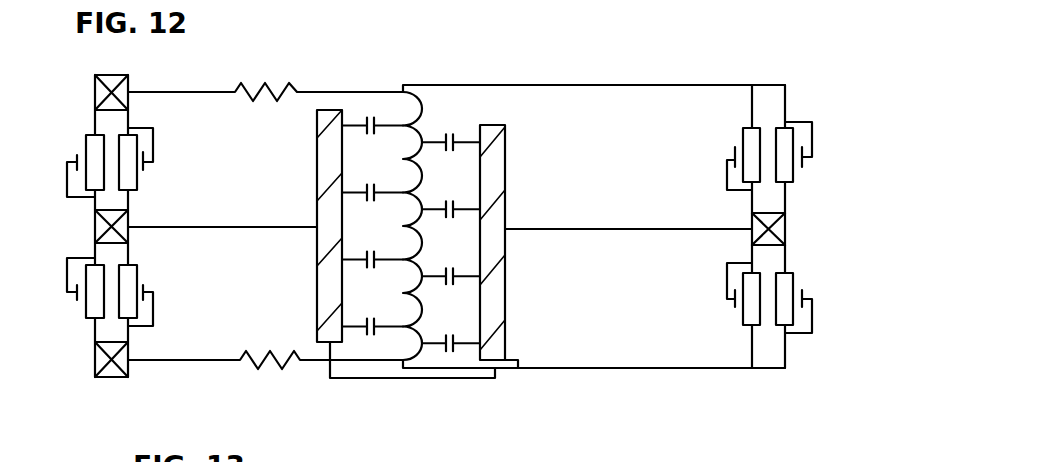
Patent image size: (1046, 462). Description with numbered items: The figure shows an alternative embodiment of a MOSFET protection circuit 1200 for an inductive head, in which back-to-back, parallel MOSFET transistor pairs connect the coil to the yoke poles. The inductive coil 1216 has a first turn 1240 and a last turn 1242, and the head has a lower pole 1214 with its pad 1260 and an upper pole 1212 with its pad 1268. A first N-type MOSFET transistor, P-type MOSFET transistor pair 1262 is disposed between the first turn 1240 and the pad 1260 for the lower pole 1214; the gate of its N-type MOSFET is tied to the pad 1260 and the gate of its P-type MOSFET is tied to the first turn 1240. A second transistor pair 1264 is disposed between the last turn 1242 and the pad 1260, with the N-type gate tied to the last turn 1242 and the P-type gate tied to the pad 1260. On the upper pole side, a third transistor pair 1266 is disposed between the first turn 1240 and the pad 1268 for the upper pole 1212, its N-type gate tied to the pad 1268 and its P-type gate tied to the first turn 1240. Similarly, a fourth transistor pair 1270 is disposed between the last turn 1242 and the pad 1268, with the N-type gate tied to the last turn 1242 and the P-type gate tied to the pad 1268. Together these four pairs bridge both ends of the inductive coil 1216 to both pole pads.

The MOSFET protection circuit 1200 is at (363, 54).
The upper pole 1212 is at (502, 168).
The lower pole 1214 is at (322, 200).
The inductive coil 1216 is at (398, 363).
The first turn of the inductive coil 1240 is at (192, 90).
The last turn of the inductive coil 1242 is at (210, 362).
The pad for the lower pole 1260 is at (95, 225).
The first N-type MOSFET transistor, P-type MOSFET transistor pair 1262 is at (70, 134).
The second N-type MOSFET transistor, P-type MOSFET transistor pair 1264 is at (80, 325).
The third N-type MOSFET transistor, P-type MOSFET transistor pair 1266 is at (818, 123).
The pad for the upper pole 1268 is at (785, 232).
The fourth N-type MOSFET transistor, P-type MOSFET transistor pair 1270 is at (727, 313).